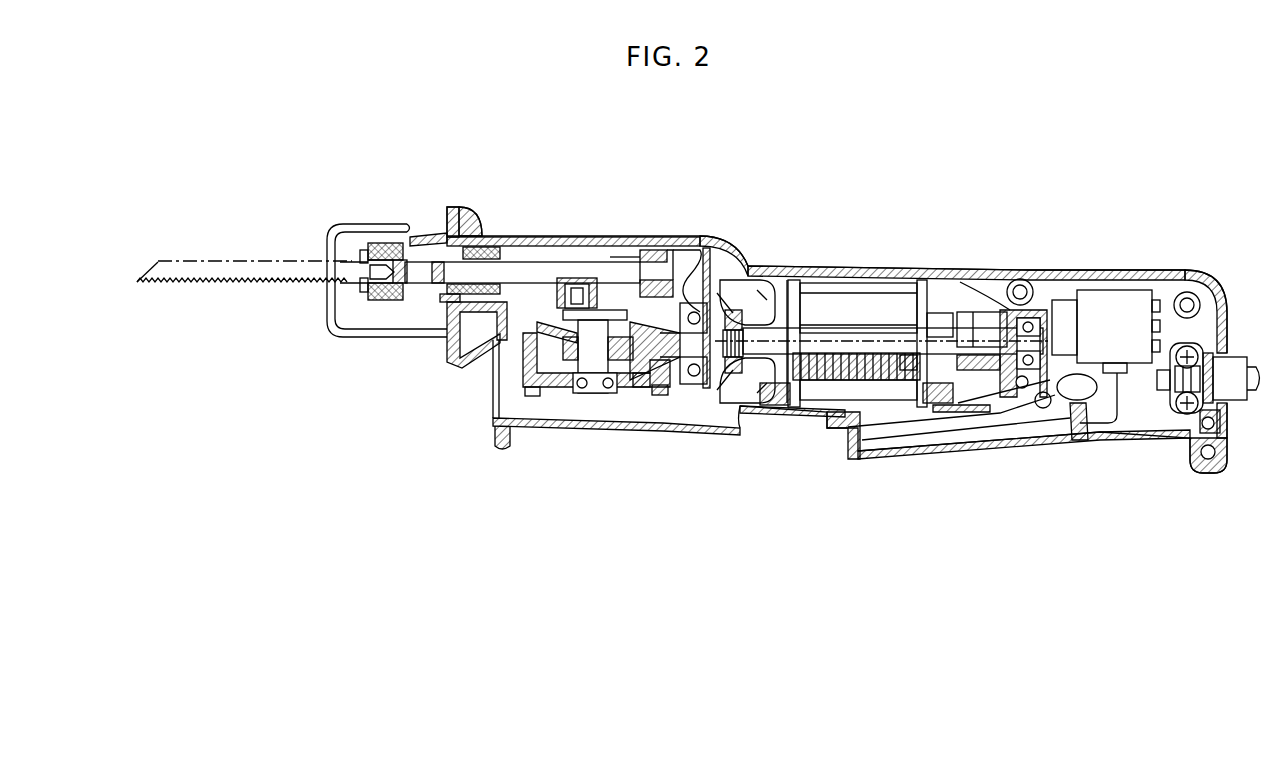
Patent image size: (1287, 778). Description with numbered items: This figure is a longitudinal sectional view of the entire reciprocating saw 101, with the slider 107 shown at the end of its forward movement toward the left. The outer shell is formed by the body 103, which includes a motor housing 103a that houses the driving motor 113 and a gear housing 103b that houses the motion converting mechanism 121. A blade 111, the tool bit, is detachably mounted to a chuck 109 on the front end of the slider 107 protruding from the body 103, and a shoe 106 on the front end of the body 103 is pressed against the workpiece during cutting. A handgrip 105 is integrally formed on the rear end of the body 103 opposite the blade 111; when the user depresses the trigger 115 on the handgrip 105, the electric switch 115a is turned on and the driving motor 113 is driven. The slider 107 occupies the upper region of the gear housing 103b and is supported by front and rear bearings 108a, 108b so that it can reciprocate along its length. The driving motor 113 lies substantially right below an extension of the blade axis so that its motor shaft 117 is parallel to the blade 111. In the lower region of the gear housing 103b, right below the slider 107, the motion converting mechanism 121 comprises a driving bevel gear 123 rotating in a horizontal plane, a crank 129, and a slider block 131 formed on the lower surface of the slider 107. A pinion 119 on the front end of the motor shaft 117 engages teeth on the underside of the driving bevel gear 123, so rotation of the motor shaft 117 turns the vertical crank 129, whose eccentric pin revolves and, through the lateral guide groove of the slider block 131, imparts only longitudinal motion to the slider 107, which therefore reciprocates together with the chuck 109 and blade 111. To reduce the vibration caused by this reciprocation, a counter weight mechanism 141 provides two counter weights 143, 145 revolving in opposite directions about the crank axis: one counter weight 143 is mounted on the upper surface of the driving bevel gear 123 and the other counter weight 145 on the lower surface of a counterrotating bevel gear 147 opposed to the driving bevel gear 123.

The reciprocating saw 101 is at (1098, 242).
The body 103 is at (808, 267).
The motor housing 103a is at (930, 270).
The gear housing 103b is at (569, 238).
The handgrip 105 is at (1032, 270).
The shoe 106 is at (330, 310).
The slider 107 is at (500, 313).
The front bearing 108a is at (483, 237).
The rear bearing 108b is at (650, 317).
The chuck 109 is at (385, 242).
The blade 111 is at (225, 258).
The driving motor 113 is at (877, 385).
The trigger 115 is at (968, 452).
The electric switch 115a is at (1130, 302).
The motor shaft 117 is at (778, 405).
The pinion 119 is at (658, 384).
The motion converting mechanism 121 is at (553, 312).
The driving bevel gear 123 is at (540, 320).
The crank 129 is at (621, 306).
The slider block 131 is at (594, 280).
The counter weight mechanism 141 is at (627, 380).
The counter weight 143 is at (699, 320).
The counter weight 145 is at (640, 380).
The counterrotating bevel gear 147 is at (553, 380).